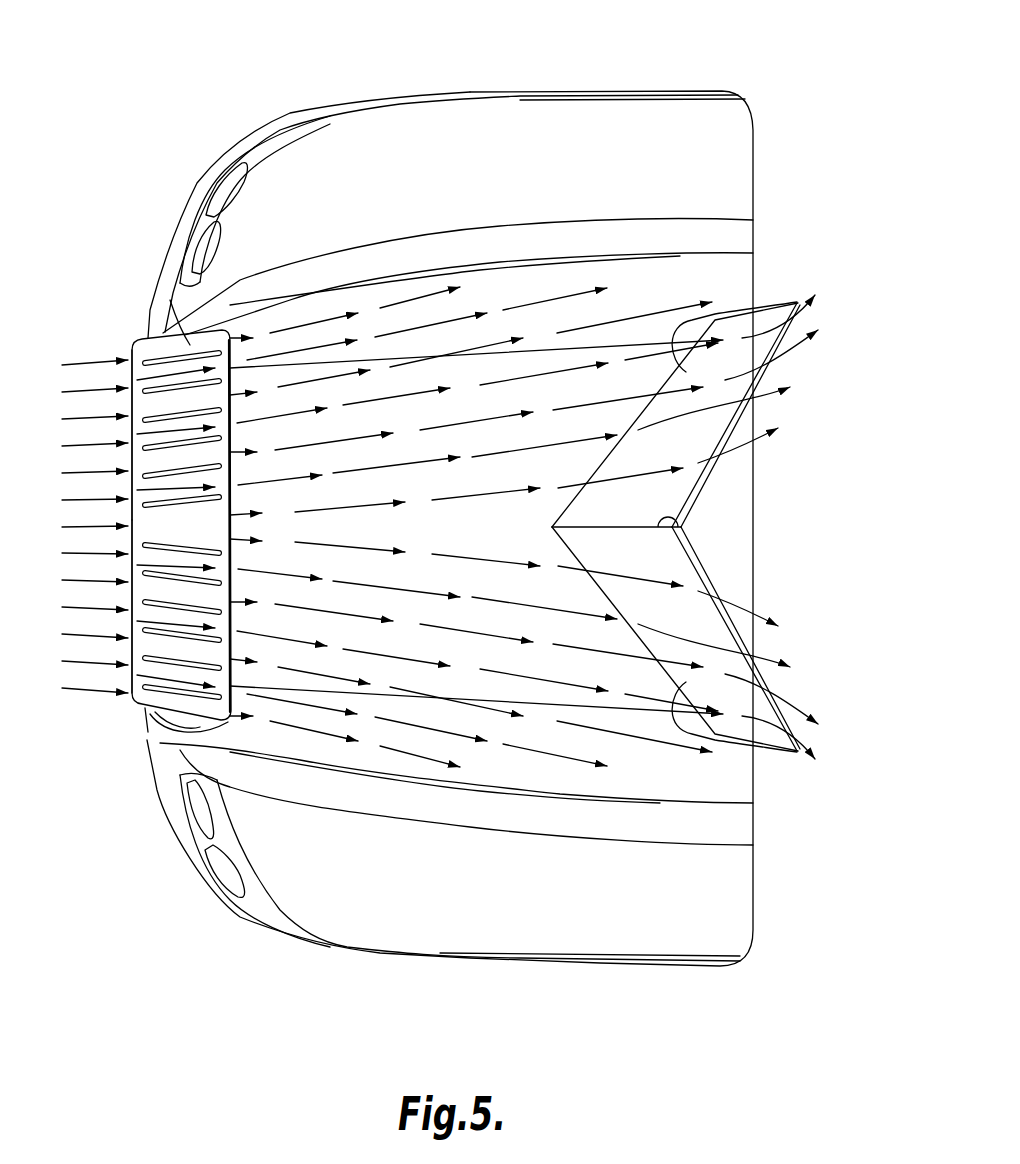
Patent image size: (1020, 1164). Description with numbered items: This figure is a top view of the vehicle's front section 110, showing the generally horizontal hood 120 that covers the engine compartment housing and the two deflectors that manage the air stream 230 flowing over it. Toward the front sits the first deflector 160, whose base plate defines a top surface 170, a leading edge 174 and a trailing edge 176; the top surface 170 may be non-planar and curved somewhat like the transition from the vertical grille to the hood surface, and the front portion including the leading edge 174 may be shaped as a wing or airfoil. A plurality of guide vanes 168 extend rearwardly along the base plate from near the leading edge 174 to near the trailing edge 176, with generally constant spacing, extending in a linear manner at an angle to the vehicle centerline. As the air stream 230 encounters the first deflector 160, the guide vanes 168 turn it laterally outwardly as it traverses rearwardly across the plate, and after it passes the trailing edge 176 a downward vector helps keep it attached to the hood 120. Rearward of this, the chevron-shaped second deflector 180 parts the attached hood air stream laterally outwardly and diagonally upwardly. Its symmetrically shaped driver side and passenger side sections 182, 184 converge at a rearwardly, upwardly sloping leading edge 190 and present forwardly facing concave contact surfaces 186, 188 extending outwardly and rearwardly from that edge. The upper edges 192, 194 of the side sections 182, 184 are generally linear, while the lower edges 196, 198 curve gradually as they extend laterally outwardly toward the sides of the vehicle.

The front section 110 is at (734, 76).
The hood 120 is at (713, 808).
The first deflector 160 is at (140, 503).
The guide vanes 168 is at (186, 358).
The top surface 170 is at (140, 368).
The leading edge 174 is at (133, 680).
The trailing edge 176 is at (210, 740).
The second deflector 180 is at (700, 528).
The driver side section 182 is at (692, 382).
The passenger side section 184 is at (693, 672).
The contact surface 186 is at (652, 516).
The contact surface 188 is at (652, 563).
The leading edge 190 is at (673, 517).
The upper edge 192 is at (703, 480).
The upper edge 194 is at (707, 582).
The lower edge 196 is at (787, 300).
The lower edge 198 is at (748, 752).
The air stream 230 is at (90, 443).